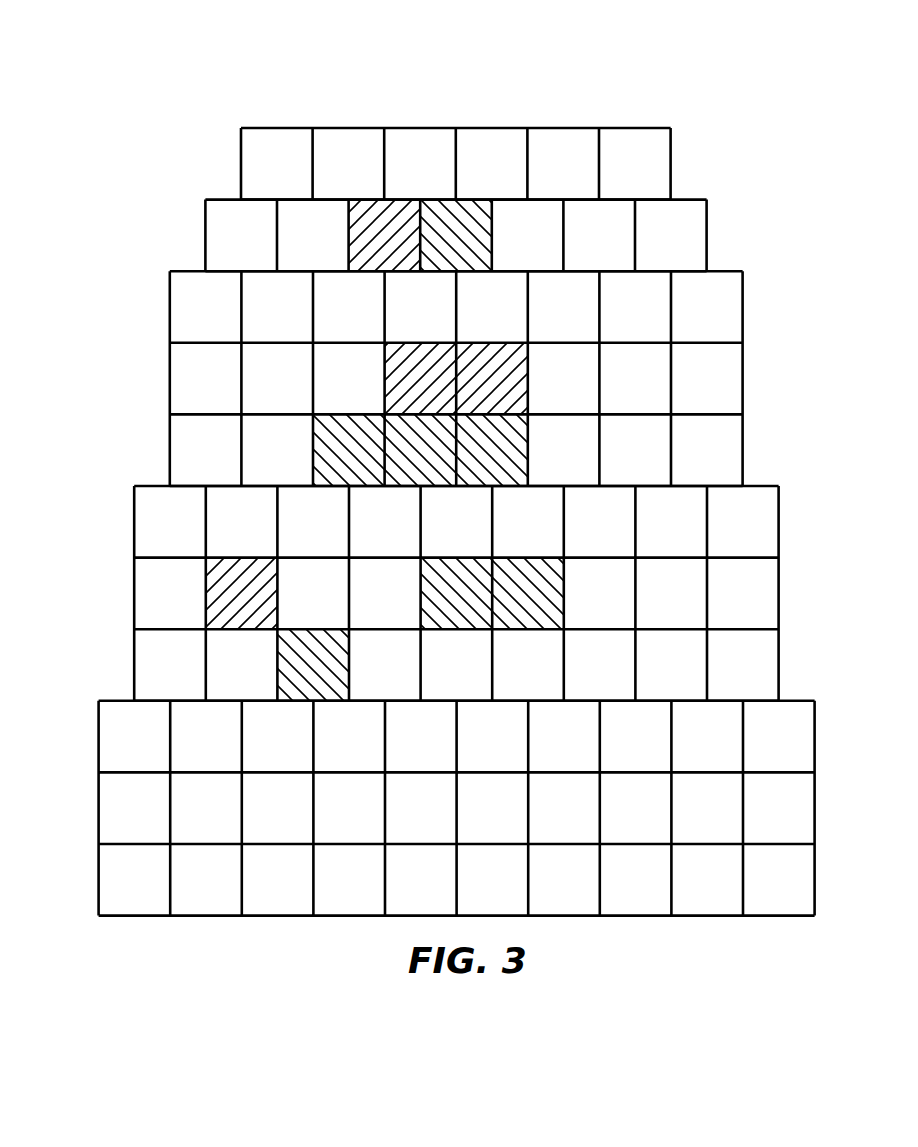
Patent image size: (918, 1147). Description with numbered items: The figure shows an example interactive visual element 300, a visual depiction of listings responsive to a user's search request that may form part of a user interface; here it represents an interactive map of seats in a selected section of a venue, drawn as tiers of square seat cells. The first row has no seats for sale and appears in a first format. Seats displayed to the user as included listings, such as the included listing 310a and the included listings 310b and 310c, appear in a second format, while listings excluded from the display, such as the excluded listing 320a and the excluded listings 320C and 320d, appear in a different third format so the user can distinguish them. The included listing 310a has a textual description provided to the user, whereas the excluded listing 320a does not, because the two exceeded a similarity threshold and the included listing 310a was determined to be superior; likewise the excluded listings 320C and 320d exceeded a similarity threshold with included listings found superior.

The interactive visual element 300 is at (738, 54).
The included listing 310a is at (386, 213).
The excluded listing 320a is at (473, 214).
The included listings 310b is at (455, 355).
The excluded listings 320C is at (468, 568).
The excluded listings 320d is at (482, 433).
The included listings 310c is at (212, 588).